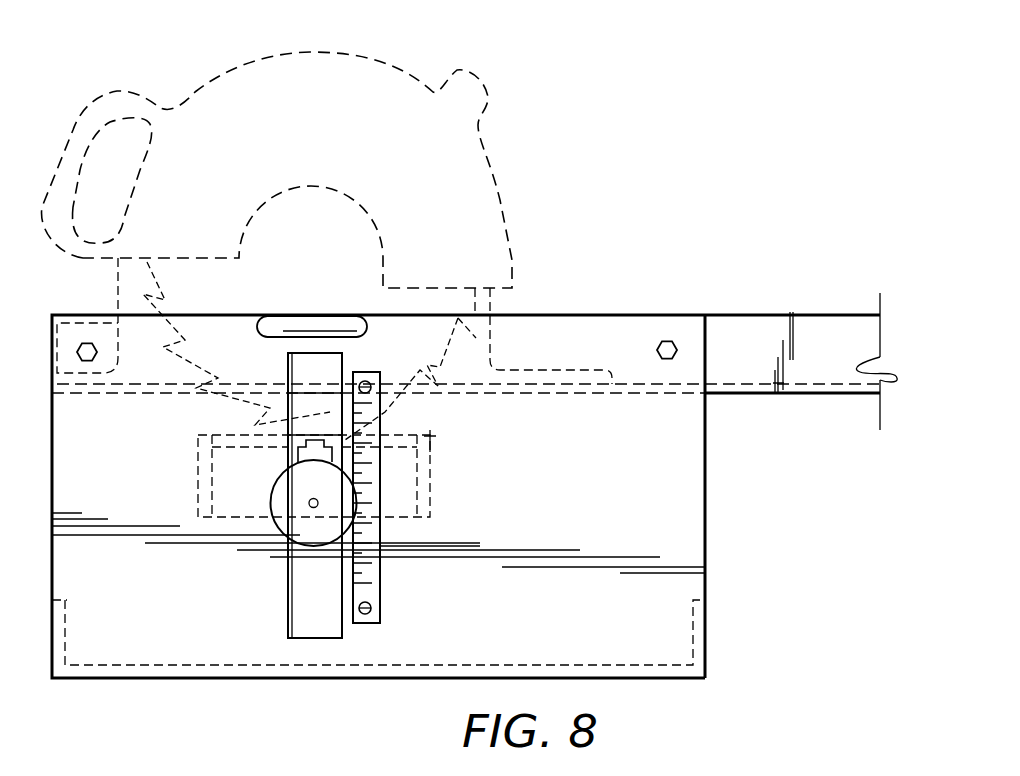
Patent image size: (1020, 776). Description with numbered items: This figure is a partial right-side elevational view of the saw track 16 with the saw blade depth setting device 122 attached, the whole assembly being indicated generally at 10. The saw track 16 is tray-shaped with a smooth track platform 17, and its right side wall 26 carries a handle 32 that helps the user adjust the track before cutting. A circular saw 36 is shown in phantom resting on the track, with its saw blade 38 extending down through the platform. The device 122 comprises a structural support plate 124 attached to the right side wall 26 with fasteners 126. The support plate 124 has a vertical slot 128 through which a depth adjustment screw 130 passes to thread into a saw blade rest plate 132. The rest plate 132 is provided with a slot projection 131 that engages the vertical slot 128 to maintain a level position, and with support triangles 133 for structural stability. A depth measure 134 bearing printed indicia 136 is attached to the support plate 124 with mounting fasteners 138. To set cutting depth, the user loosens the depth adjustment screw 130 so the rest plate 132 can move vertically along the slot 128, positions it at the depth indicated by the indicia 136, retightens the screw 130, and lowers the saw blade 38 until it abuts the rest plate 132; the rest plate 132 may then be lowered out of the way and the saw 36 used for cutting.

The saw apparatus 10 is at (650, 175).
The saw track 16 is at (798, 410).
The track platform 17 is at (728, 378).
The right side wall 26 is at (721, 314).
The handles 32 is at (282, 324).
The circular saw 36 is at (382, 72).
The saw blade 38 is at (200, 363).
The saw blade depth setting device 122 is at (735, 593).
The structural support plate 124 is at (704, 505).
The fasteners 126 is at (87, 342).
The vertical slot 128 is at (287, 610).
The depth adjustment screw 130 is at (278, 532).
The slot projection 131 is at (330, 445).
The saw blade rest plate 132 is at (431, 437).
The support triangles 133 is at (198, 476).
The depth measure 134 is at (376, 594).
The indicia 136 is at (363, 573).
The mounting fasteners 138 is at (368, 381).